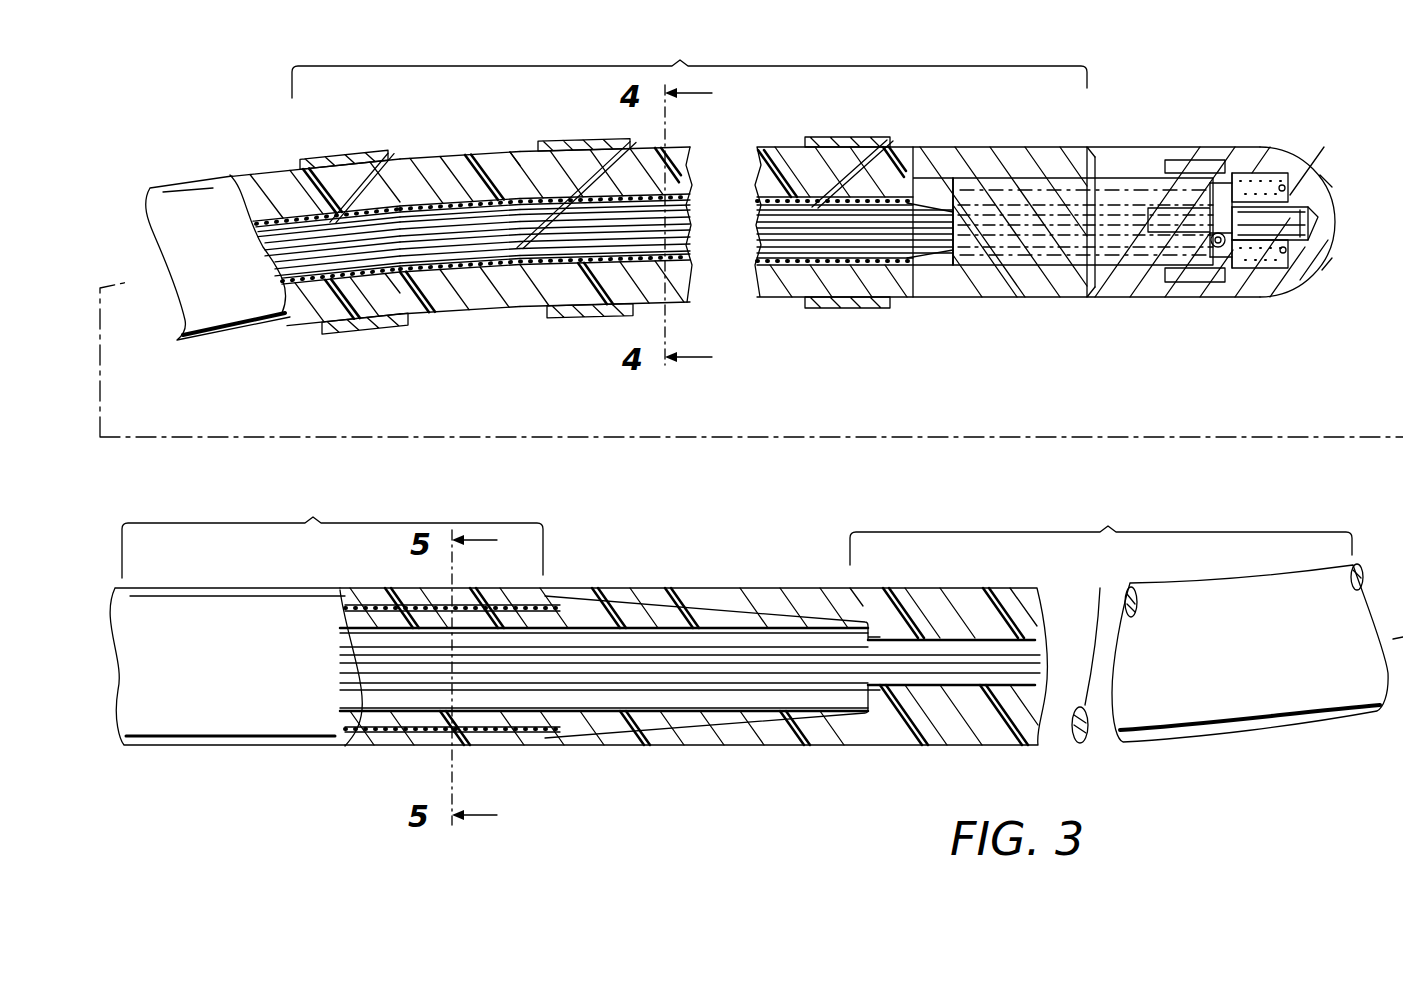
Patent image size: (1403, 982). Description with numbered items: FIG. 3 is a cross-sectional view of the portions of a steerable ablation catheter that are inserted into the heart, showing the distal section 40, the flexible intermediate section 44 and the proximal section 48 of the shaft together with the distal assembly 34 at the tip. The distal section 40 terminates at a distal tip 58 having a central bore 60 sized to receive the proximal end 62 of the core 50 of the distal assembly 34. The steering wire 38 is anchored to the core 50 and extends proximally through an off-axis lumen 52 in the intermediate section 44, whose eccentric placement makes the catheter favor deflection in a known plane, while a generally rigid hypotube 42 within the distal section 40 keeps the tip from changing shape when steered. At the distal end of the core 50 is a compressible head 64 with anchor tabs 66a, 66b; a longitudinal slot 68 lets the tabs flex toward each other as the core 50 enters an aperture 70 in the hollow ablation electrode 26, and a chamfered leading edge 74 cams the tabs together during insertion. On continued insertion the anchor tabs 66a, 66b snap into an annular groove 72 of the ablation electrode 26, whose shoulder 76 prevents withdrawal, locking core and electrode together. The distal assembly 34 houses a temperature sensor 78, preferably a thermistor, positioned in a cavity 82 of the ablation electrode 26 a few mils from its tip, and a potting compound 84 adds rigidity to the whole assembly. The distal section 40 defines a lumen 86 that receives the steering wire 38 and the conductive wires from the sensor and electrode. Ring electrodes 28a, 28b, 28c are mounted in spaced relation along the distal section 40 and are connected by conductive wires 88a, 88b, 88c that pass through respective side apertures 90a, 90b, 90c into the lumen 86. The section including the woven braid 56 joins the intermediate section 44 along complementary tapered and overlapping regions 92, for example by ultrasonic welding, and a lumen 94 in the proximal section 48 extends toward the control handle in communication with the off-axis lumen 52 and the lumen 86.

The ablation electrode 26 is at (1307, 180).
The ring electrode 28a is at (827, 140).
The ring electrode 28b is at (552, 140).
The ring electrode 28c is at (353, 160).
The distal assembly 34 is at (1196, 122).
The steering wire 38 is at (930, 240).
The distal section 40 is at (689, 64).
The hypotube 42 is at (480, 263).
The intermediate section 44 is at (1119, 620).
The proximal section 48 is at (326, 619).
The core 50 is at (1077, 257).
The off-axis lumen 52 is at (897, 640).
The woven braid 56 is at (373, 607).
The distal tip 58 is at (1088, 148).
The central bore 60 is at (1023, 253).
The proximal end 62 is at (980, 273).
The compressible head 64 is at (1197, 260).
The anchor tab 66a is at (1170, 268).
The anchor tab 66b is at (1173, 163).
The longitudinal slot 68 is at (1093, 213).
The aperture 70 is at (1253, 185).
The annular groove 72 is at (1220, 273).
The chamfered leading edge 74 is at (1250, 187).
The shoulder 76 is at (1150, 280).
The temperature sensor 78 is at (1290, 227).
The cavity 82 is at (1313, 220).
The potting compound 84 is at (1257, 253).
The lumen 86 is at (262, 226).
The conductive wire 88a is at (817, 187).
The conductive wire 88b is at (555, 190).
The conductive wire 88c is at (333, 203).
The aperture 90a is at (862, 167).
The aperture 90b is at (597, 163).
The aperture 90c is at (373, 173).
The tapered and overlapping regions 92 is at (653, 607).
The lumen 94 is at (633, 700).